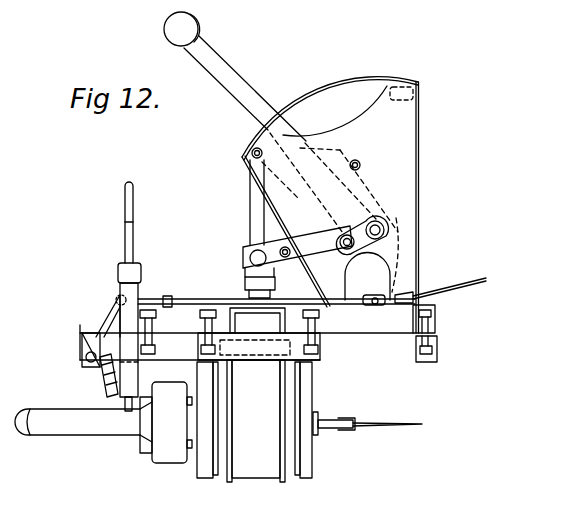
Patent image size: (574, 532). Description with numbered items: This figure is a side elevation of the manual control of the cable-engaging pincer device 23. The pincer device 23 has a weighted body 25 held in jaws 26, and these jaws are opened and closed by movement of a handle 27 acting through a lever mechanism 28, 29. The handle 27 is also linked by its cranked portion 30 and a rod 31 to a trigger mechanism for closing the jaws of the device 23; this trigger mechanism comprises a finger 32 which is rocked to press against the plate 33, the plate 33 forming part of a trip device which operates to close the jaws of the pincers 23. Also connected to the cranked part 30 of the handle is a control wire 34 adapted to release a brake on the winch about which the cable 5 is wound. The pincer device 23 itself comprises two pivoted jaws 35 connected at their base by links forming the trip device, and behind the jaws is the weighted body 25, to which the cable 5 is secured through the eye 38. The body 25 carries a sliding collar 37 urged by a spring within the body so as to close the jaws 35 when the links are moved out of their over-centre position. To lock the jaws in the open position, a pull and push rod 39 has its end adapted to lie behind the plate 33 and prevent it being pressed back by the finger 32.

The cable 5 is at (410, 420).
The pincer device 23 is at (118, 482).
The weighted body 25 is at (254, 419).
The jaws 26 is at (222, 481).
The handle 27 is at (238, 95).
The lever mechanism 28 is at (312, 196).
The lever mechanism 29 is at (245, 296).
The cranked portion 30 is at (393, 253).
The rod 31 is at (207, 298).
The finger 32 is at (108, 399).
The plate 33 is at (120, 405).
The control wire 34 is at (484, 286).
The pivoted jaws 35 is at (55, 408).
The sliding collar 37 is at (166, 422).
The eye 38 is at (330, 422).
The pull and push rod 39 is at (131, 251).